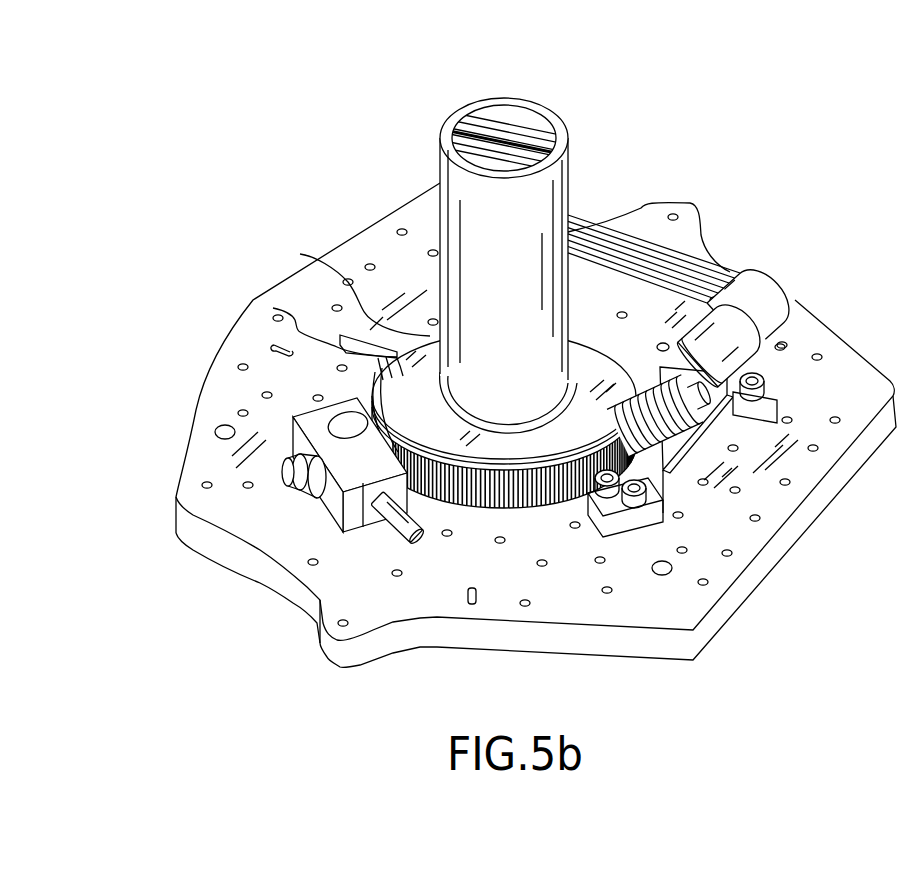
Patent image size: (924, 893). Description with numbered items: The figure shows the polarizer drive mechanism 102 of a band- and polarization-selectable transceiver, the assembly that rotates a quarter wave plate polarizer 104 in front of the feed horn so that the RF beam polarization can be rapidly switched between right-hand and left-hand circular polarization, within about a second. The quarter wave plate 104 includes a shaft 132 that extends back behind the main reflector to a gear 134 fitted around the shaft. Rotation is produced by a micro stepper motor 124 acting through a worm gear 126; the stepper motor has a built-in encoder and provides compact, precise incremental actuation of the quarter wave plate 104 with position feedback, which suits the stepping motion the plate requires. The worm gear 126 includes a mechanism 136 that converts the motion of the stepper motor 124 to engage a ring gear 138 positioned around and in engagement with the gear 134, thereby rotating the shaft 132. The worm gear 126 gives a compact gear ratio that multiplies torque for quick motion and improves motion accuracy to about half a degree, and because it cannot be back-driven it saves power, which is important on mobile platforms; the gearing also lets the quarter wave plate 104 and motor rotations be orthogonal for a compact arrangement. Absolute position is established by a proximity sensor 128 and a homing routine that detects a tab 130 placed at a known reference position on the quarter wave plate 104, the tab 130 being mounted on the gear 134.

The drive mechanism 102 is at (186, 160).
The ¼ wave plate polarizer 104 is at (488, 150).
The micro stepper motor 124 is at (784, 290).
The worm gear 126 is at (705, 563).
The proximity sensor 128 is at (288, 478).
The tab 130 is at (273, 308).
The shaft 132 is at (448, 210).
The gear 134 is at (300, 254).
The mechanism 136 is at (668, 470).
The ring gear 138 is at (525, 500).